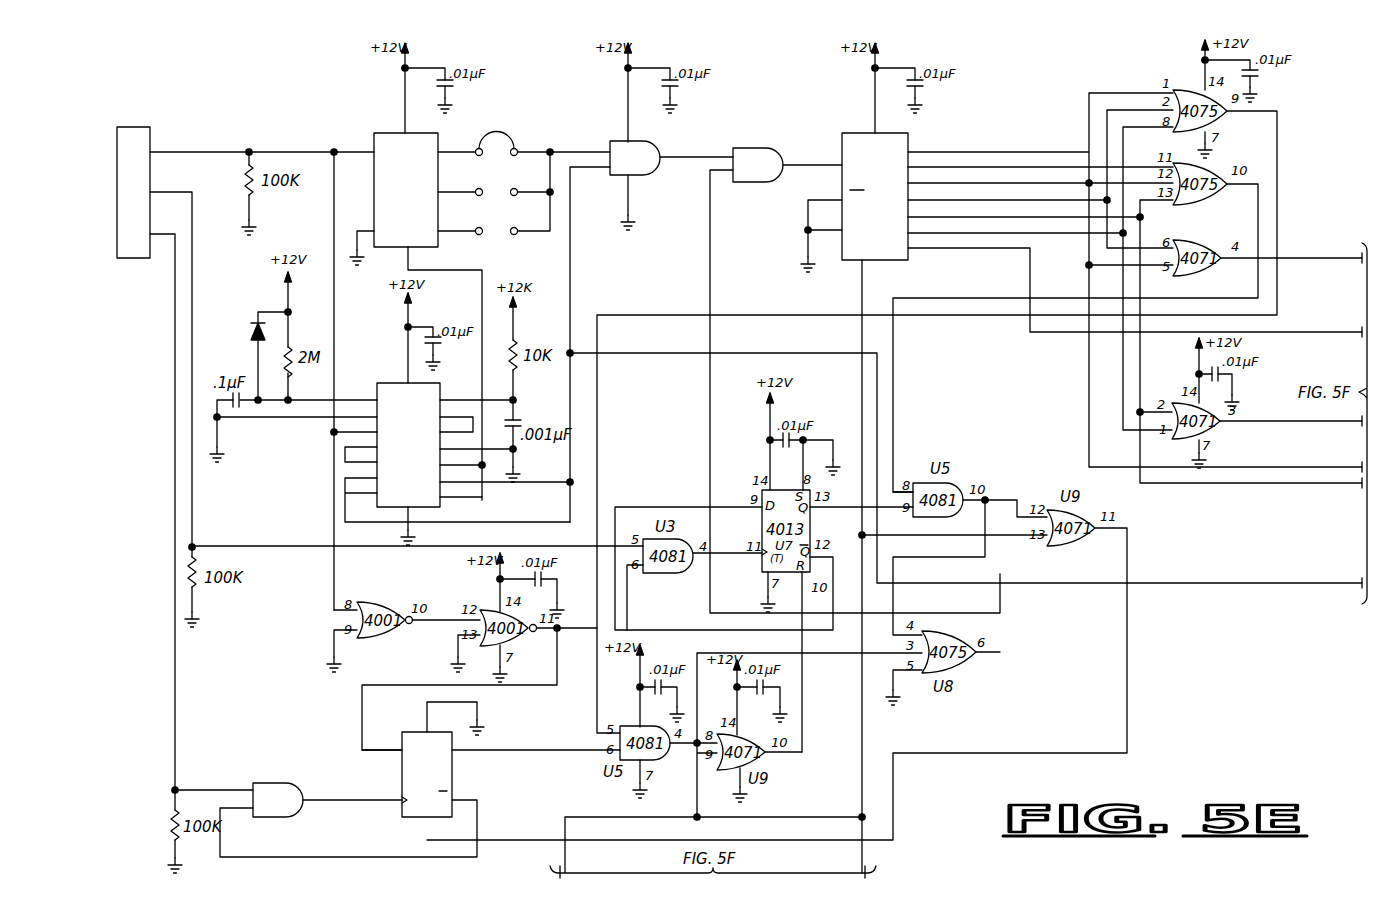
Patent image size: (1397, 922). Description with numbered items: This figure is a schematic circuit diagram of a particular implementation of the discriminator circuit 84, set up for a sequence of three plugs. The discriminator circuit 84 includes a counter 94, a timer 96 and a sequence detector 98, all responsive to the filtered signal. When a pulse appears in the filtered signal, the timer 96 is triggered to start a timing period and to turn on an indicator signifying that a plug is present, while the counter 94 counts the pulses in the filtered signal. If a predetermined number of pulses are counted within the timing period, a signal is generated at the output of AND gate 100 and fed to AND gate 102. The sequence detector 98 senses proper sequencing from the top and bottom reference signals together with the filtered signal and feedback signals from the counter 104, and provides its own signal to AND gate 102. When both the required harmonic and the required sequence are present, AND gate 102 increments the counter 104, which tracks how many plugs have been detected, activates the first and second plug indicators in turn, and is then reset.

The discriminator circuit 84 is at (244, 98).
The counter 94 is at (438, 133).
The timer 96 is at (383, 383).
The sequence detector 98 is at (313, 710).
The AND gate 100 is at (662, 175).
The AND gate 102 is at (775, 182).
The counter 104 is at (848, 260).